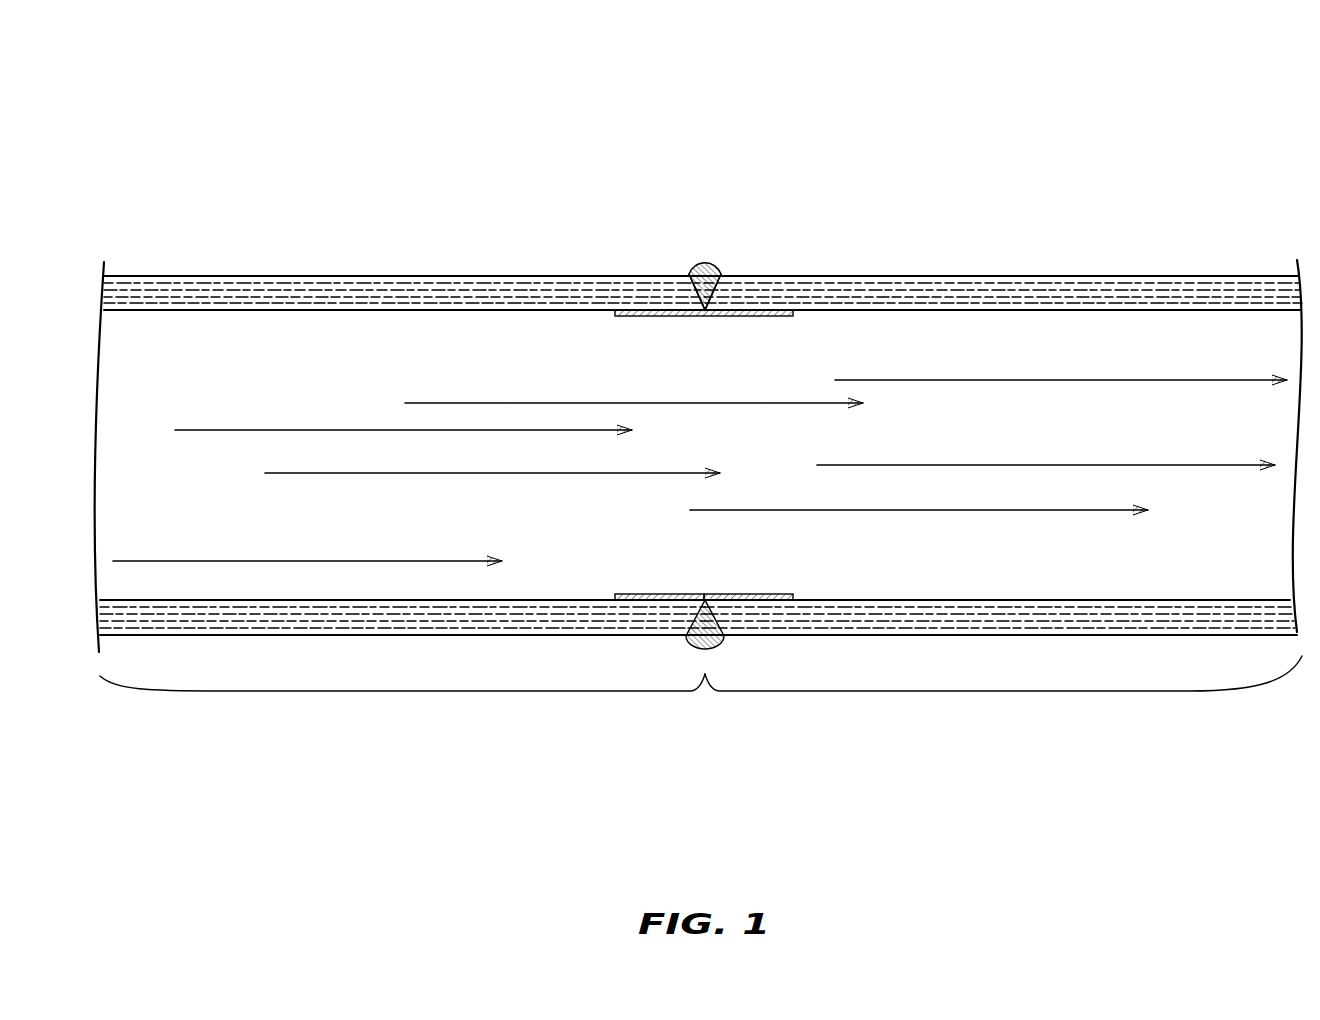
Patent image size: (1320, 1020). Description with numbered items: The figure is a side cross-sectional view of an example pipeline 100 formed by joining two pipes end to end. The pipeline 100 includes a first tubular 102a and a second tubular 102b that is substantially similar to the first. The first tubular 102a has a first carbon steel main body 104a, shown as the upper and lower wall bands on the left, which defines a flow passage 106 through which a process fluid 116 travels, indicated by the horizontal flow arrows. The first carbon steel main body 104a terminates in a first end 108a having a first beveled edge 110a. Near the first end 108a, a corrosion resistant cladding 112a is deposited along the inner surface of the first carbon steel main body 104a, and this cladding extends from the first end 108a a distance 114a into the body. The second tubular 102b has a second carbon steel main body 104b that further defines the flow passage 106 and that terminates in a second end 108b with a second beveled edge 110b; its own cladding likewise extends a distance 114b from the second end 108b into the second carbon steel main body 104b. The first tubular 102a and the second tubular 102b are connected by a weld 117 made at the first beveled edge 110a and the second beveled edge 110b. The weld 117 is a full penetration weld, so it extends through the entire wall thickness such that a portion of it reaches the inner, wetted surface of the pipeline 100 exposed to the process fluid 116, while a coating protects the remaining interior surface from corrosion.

The pipeline 100 is at (238, 108).
The first tubular 102a is at (402, 712).
The second tubular 102b is at (1003, 703).
The first carbon steel main body 104a is at (292, 276).
The second carbon steel main body 104b is at (1065, 276).
The flow passage 106 is at (243, 519).
The first end 108a is at (654, 224).
The second end 108b is at (736, 236).
The first beveled edge 110a is at (690, 278).
The second beveled edge 110b is at (720, 280).
The corrosion resistant cladding 112a is at (666, 318).
The distance 114a is at (615, 596).
The distance 114b is at (794, 596).
The process fluid 116 is at (215, 428).
The weld 117 is at (703, 267).